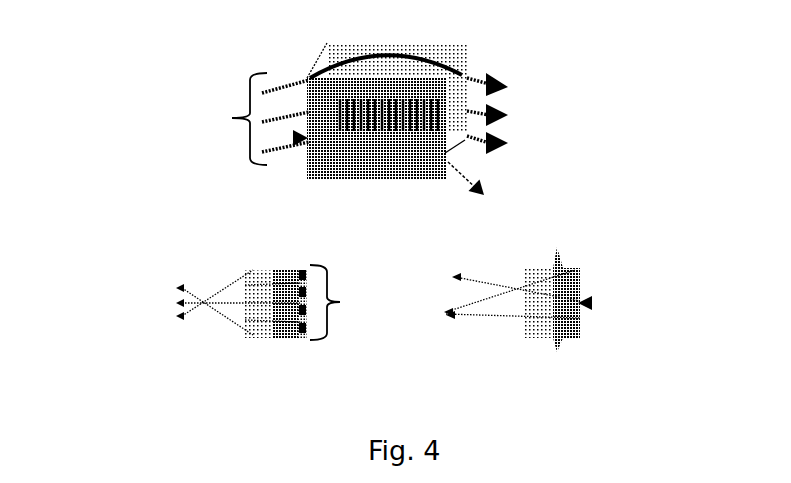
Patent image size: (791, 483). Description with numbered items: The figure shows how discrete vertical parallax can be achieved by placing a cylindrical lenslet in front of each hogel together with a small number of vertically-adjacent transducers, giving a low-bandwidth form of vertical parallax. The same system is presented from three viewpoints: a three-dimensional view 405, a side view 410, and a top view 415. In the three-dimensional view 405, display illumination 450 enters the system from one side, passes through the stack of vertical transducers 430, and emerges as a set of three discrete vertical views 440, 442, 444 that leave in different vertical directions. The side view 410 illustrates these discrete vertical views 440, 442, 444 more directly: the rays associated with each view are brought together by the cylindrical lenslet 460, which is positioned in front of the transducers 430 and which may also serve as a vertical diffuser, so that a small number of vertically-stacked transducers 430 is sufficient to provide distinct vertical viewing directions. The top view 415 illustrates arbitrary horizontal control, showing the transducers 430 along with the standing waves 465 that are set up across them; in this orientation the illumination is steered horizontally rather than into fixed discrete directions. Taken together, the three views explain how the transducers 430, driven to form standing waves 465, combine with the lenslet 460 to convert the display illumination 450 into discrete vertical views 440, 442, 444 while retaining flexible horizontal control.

The three-dimensional view 405 is at (297, 32).
The side view 410 is at (218, 254).
The top view 415 is at (613, 236).
The vertical transducers 430 is at (489, 57).
The discrete vertical view 440 is at (502, 87).
The discrete vertical view 442 is at (507, 115).
The discrete vertical view 444 is at (492, 152).
The display illumination 450 is at (232, 118).
The cylindrical lenslet 460 is at (265, 267).
The standing waves 465 is at (590, 303).